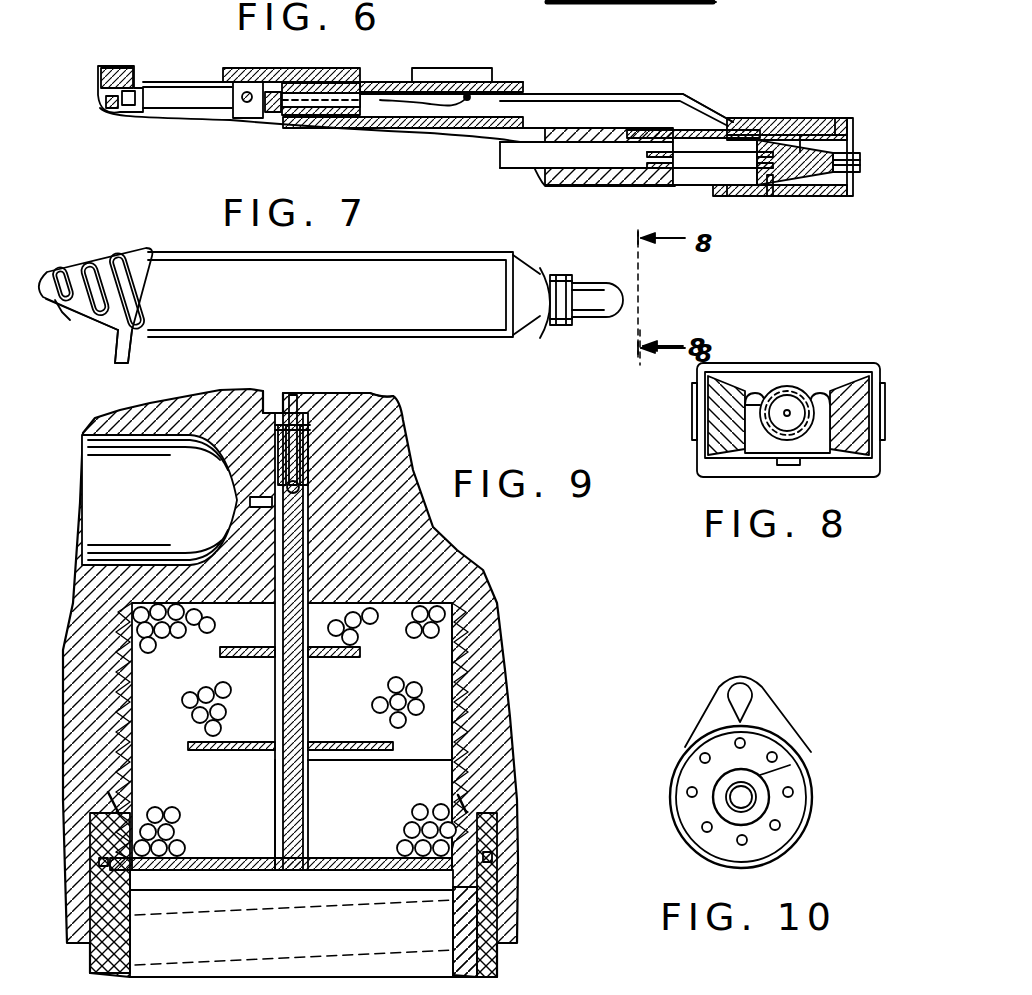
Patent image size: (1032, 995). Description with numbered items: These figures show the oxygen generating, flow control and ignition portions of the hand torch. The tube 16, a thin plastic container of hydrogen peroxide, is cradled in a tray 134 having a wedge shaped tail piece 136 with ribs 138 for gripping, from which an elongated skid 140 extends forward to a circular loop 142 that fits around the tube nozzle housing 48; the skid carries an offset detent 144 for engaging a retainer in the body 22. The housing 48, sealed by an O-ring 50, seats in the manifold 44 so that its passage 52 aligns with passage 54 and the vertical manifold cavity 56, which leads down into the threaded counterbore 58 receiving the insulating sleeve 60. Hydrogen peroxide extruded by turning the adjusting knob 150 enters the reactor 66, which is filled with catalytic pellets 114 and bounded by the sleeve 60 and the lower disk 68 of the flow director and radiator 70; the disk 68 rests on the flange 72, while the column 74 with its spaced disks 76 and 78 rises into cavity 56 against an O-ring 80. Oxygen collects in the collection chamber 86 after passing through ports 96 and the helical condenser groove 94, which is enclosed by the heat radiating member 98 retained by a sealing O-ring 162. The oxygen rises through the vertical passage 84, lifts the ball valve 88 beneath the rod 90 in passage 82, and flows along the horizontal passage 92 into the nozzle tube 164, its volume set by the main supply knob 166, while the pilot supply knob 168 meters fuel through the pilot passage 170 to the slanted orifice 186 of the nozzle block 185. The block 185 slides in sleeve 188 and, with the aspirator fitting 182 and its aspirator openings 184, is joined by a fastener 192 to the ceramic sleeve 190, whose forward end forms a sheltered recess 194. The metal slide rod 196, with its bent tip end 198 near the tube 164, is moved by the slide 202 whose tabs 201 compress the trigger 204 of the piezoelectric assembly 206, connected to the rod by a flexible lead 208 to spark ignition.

In FIG. 6, the main supply knob 166 is at (714, 3).
In FIG. 6, the adjusting knob 150 is at (121, 66).
In FIG. 6, the body 22 is at (405, 82).
In FIG. 6, the manifold 44 is at (488, 140).
In FIG. 9, the manifold 44 is at (478, 557).
In FIG. 6, the slide 202 is at (352, 78).
In FIG. 6, the pilot supply knob 168 is at (470, 66).
In FIG. 6, the trigger 204 is at (258, 118).
In FIG. 6, the piezoelectric crystal assembly 206 is at (350, 112).
In FIG. 6, the flexible lead 208 is at (420, 130).
In FIG. 6, the depending tabs 201 is at (235, 118).
In FIG. 6, the slide rod 196 is at (560, 93).
In FIG. 6, the pilot passage 170 is at (575, 140).
In FIG. 6, the horizontal passage 92 is at (592, 170).
In FIG. 9, the horizontal passage 92 is at (380, 406).
In FIG. 10, the horizontal passage 92 is at (736, 797).
In FIG. 6, the aspirator fitting 182 is at (858, 152).
In FIG. 10, the aspirator fitting 182 is at (790, 767).
In FIG. 6, the ceramic electrical insulating sleeve 190 is at (843, 197).
In FIG. 10, the ceramic electrical insulating sleeve 190 is at (697, 724).
In FIG. 6, the tip end 198 is at (855, 124).
In FIG. 10, the tip end 198 is at (750, 700).
In FIG. 6, the aspirator openings 184 is at (855, 178).
In FIG. 10, the aspirator openings 184 is at (790, 730).
In FIG. 6, the nozzle tube 164 is at (745, 138).
In FIG. 10, the nozzle tube 164 is at (760, 800).
In FIG. 6, the slanted orifice 186 is at (808, 140).
In FIG. 6, the sleeve 188 is at (697, 128).
In FIG. 6, the sheltered annular recess 194 is at (835, 128).
In FIG. 6, the fastener 192 is at (768, 197).
In FIG. 6, the nozzle block 185 is at (800, 198).
In FIG. 7, the tube 16 is at (433, 254).
In FIG. 8, the tube 16 is at (730, 380).
In FIG. 7, the tray 134 is at (135, 244).
In FIG. 7, the tail piece 136 is at (80, 266).
In FIG. 8, the tail piece 136 is at (772, 392).
In FIG. 7, the ribs 138 is at (100, 323).
In FIG. 8, the ribs 138 is at (692, 413).
In FIG. 7, the offset detent 144 is at (186, 343).
In FIG. 8, the offset detent 144 is at (790, 466).
In FIG. 7, the skid 140 is at (455, 340).
In FIG. 7, the circular loop 142 is at (547, 272).
In FIG. 8, the circular loop 142 is at (750, 400).
In FIG. 7, the tube nozzle housing 48 is at (605, 282).
In FIG. 8, the tube nozzle housing 48 is at (788, 400).
In FIG. 9, the tube nozzle housing 48 is at (85, 505).
In FIG. 7, the O-ring 50 is at (565, 326).
In FIG. 8, the passage 52 is at (788, 412).
In FIG. 9, the passage 54 is at (248, 500).
In FIG. 9, the counterbore 58 is at (475, 660).
In FIG. 9, the vertical manifold cavity 56 is at (306, 555).
In FIG. 9, the O-ring 80 is at (266, 410).
In FIG. 9, the vertically extending passage 82 is at (292, 396).
In FIG. 9, the rod 90 is at (308, 420).
In FIG. 9, the ball valve 88 is at (300, 490).
In FIG. 9, the disk 78 is at (238, 650).
In FIG. 9, the column 74 is at (308, 697).
In FIG. 9, the disk 76 is at (225, 752).
In FIG. 9, the flow director and radiator 70 is at (325, 772).
In FIG. 9, the sleeve 60 is at (455, 735).
In FIG. 9, the reactor 66 is at (380, 778).
In FIG. 9, the vertical passage 84 is at (280, 830).
In FIG. 9, the lower plate or disk 68 is at (228, 857).
In FIG. 9, the pellets 114 is at (230, 677).
In FIG. 9, the ports 96 is at (132, 830).
In FIG. 9, the flange 72 is at (165, 880).
In FIG. 9, the collection chamber 86 is at (291, 933).
In FIG. 9, the groove 94 is at (100, 968).
In FIG. 9, the heat radiating cylindrical member 98 is at (487, 962).
In FIG. 9, the sealing O-ring 162 is at (493, 856).